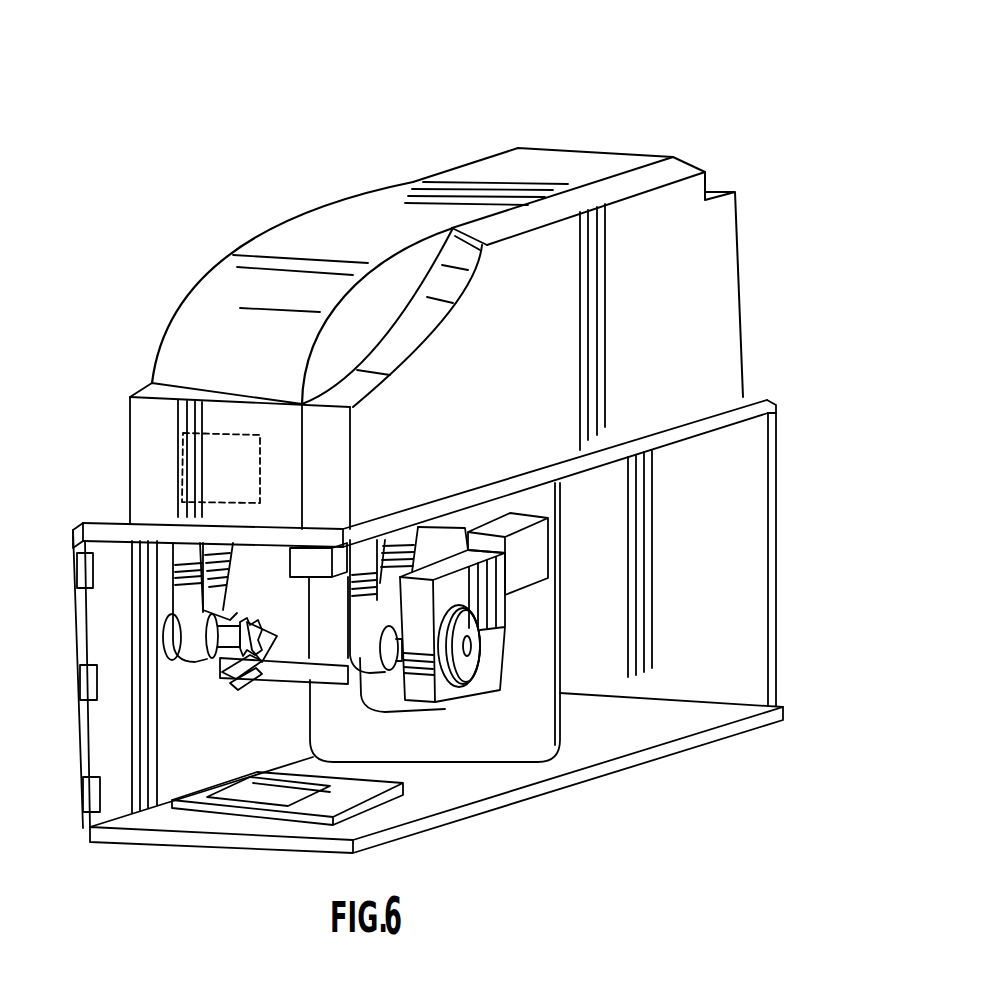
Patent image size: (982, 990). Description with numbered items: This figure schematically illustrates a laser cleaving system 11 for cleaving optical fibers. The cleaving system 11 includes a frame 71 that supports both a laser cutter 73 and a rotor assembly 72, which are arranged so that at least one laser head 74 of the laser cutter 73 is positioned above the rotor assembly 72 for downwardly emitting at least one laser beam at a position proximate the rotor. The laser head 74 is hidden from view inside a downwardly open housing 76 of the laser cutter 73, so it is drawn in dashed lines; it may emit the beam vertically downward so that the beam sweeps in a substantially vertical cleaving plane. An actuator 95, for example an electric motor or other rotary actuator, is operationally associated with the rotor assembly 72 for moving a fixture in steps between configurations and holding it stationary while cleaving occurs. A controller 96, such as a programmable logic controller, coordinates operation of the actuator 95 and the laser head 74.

The cleaving system 11 is at (555, 97).
The frame 71 is at (566, 489).
The rotor assembly 72 is at (203, 700).
The laser cutter 73 is at (212, 255).
The laser head 74 is at (215, 433).
The housing 76 is at (410, 182).
The actuator 95 is at (473, 667).
The controller 96 is at (528, 562).